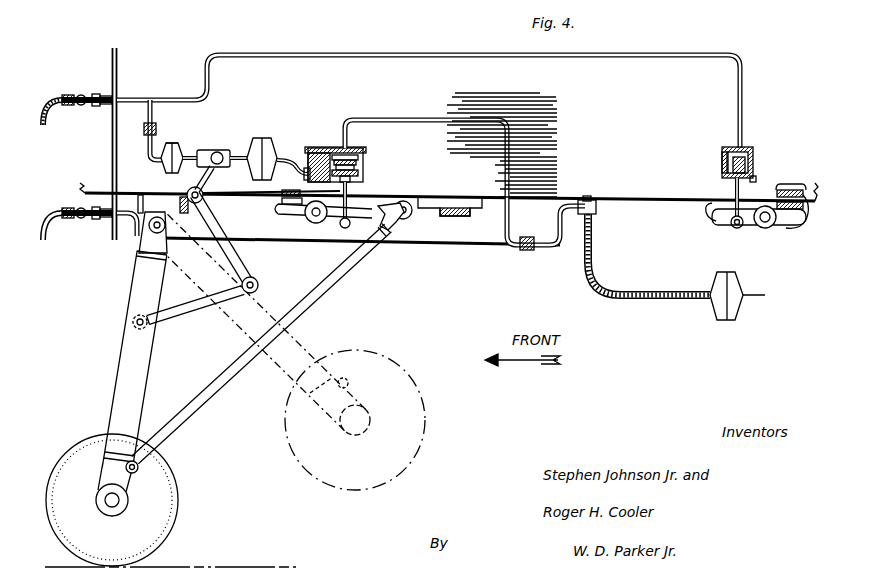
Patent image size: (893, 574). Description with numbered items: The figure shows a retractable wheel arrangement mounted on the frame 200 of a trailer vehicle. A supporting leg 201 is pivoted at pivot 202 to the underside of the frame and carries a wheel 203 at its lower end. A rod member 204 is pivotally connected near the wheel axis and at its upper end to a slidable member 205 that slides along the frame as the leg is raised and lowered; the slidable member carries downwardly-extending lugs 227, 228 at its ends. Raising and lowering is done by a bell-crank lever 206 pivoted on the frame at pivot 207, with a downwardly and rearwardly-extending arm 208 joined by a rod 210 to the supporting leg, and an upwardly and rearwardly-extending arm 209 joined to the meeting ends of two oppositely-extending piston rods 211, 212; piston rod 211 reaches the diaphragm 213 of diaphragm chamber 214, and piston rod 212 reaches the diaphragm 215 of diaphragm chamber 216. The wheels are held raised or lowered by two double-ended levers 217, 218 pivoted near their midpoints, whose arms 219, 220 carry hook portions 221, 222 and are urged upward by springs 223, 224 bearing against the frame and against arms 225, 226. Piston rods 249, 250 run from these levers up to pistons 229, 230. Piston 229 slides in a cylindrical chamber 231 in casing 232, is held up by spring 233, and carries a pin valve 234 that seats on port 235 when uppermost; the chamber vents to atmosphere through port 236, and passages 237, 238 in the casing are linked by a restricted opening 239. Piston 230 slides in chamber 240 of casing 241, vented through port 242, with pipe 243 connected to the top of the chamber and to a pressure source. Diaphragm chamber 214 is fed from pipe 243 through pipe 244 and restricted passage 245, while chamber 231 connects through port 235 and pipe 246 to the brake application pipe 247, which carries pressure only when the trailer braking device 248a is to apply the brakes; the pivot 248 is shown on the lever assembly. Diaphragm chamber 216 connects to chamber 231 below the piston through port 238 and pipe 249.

The frame 200 is at (76, 188).
The supporting leg 201 is at (118, 379).
The pivot 202 is at (156, 224).
The wheel 203 is at (172, 521).
The rod member 204 is at (290, 318).
The slidable member 205 is at (440, 202).
The bell-crank lever 206 is at (208, 199).
The pivot 207 is at (188, 195).
The arm 208 is at (243, 265).
The arm 209 is at (204, 192).
The rod 210 is at (189, 311).
The piston rod 211 is at (191, 152).
The piston rod 212 is at (212, 151).
The diaphragm 213 is at (165, 167).
The diaphragm chamber 214 is at (173, 142).
The diaphragm 215 is at (289, 158).
The diaphragm chamber 216 is at (265, 138).
The double-ended lever 217 is at (316, 225).
The double-ended lever 218 is at (772, 229).
The arm 219 is at (352, 230).
The arm 220 is at (730, 220).
The hook portion 221 is at (395, 225).
The hook portion 222 is at (706, 210).
The spring 223 is at (284, 205).
The spring 224 is at (800, 214).
The arm 225 is at (296, 210).
The arm 226 is at (796, 225).
The lug 227 is at (377, 243).
The lug 228 is at (470, 210).
The piston 229 is at (342, 135).
The piston 230 is at (753, 153).
The cylindrical chamber 231 is at (356, 166).
The casing 232 is at (352, 156).
The spring 233 is at (356, 172).
The pin valve 234 is at (354, 161).
The port 235 is at (347, 150).
The port 236 is at (357, 179).
The passage 237 is at (312, 155).
The passage 238 is at (344, 191).
The restricted opening 239 is at (310, 176).
The cylindrical chamber 240 is at (748, 166).
The casing 241 is at (722, 165).
The port 242 is at (756, 178).
The pipe 243 is at (667, 60).
The pipe 244 is at (148, 112).
The restricted passage 245 is at (144, 130).
The pipe 246 is at (512, 150).
The brake application pipe 247 is at (463, 240).
The pivot 248 is at (403, 208).
The trailer braking device 248a is at (712, 296).
The piston rod 249 is at (206, 195).
The piston rod 250 is at (733, 196).